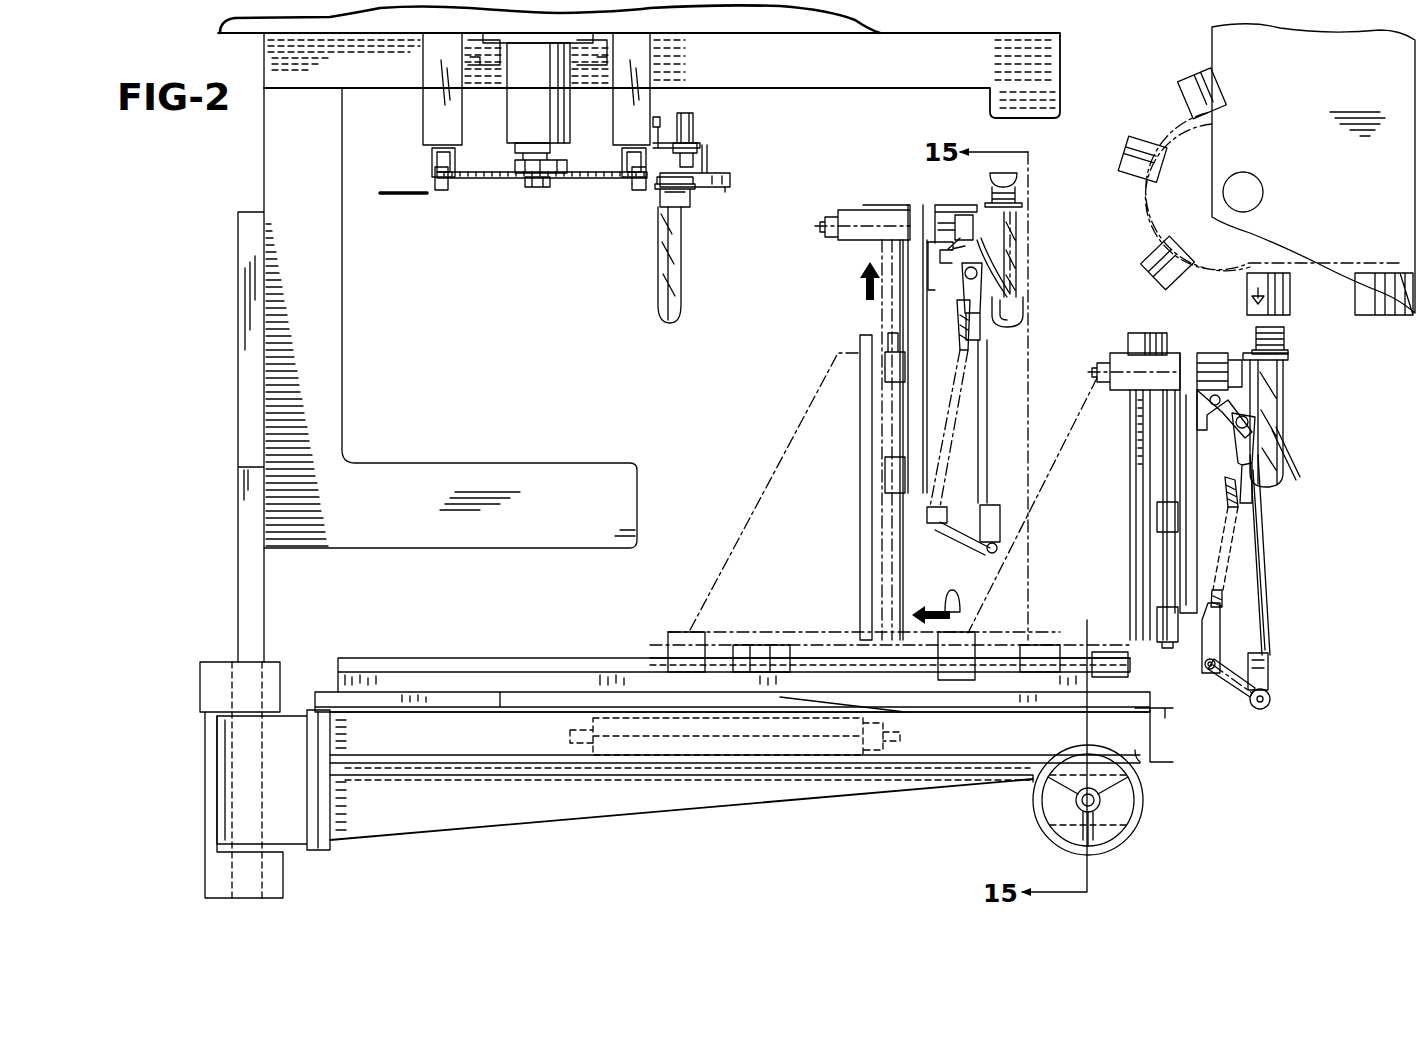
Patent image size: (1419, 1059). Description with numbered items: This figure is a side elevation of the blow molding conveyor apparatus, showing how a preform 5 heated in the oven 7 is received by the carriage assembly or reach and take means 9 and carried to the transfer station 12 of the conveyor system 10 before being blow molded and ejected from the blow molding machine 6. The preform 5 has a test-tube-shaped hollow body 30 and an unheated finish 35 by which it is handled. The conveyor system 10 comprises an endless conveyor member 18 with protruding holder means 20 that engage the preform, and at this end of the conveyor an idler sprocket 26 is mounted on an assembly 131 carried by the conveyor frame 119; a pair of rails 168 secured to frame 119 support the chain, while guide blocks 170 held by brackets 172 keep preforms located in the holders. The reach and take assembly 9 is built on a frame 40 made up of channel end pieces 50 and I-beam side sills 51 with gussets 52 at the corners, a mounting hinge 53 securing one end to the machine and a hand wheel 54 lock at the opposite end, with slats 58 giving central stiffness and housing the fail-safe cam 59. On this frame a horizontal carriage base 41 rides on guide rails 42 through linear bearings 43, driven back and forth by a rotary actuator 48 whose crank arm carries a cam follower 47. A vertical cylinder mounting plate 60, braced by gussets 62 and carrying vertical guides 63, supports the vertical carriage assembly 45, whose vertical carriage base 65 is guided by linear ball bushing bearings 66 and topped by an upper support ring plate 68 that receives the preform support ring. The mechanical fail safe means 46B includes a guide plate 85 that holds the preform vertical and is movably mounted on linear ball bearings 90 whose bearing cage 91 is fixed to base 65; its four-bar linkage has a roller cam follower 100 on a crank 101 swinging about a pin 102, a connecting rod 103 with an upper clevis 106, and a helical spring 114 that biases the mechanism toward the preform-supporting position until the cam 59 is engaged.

The preform 5 is at (655, 258).
The blow molding machine 6 is at (905, 23).
The oven 7 is at (1305, 148).
The carriage assembly (reach and take) means 9 is at (788, 403).
The conveyor system 10 is at (420, 129).
The transfer station 12 is at (734, 165).
The endless conveyor member 18 is at (490, 182).
The holder means 20 is at (405, 200).
The idler sprocket 26 is at (573, 182).
The hollow body 30 is at (658, 289).
The finish 35 is at (1016, 189).
The frame 40 is at (470, 815).
The horizontal carriage base 41 is at (900, 605).
The guide rails 42 is at (478, 658).
The linear bearings 43 is at (683, 632).
The vertical carriage assembly 45 is at (868, 321).
The mechanical fail safe means 46B is at (992, 386).
The cam follower 47 is at (962, 632).
The rotary actuator 48 is at (823, 755).
The channel end pieces 50 is at (1158, 734).
The I-beam side sills 51 is at (527, 750).
The gussets 52 is at (445, 708).
The mounting hinge 53 is at (222, 788).
The hand wheel 54 is at (1040, 807).
The slats 58 is at (750, 700).
The cam 59 is at (837, 692).
The vertical cylinder mounting plate 60 is at (862, 548).
The gussets 62 is at (757, 484).
The vertical guides 63 is at (902, 561).
The vertical carriage base 65 is at (914, 207).
The linear ball bushing bearings 66 is at (888, 372).
The upper support ring plate 68 is at (972, 207).
The guide plate 85 is at (1020, 299).
The linear ball bearings 90 is at (852, 207).
The bearing cage 91 is at (1127, 385).
The cam follower 100 is at (1273, 694).
The crank 101 is at (1257, 692).
The pin or axle 102 is at (1207, 674).
The connecting rod 103 is at (993, 457).
The upper clevis 106 is at (1253, 435).
The helical spring 114 is at (963, 349).
The frame 119 is at (428, 75).
The assembly 131 is at (520, 117).
The rails 168 is at (432, 156).
The guide blocks 170 is at (727, 190).
The brackets 172 is at (710, 153).